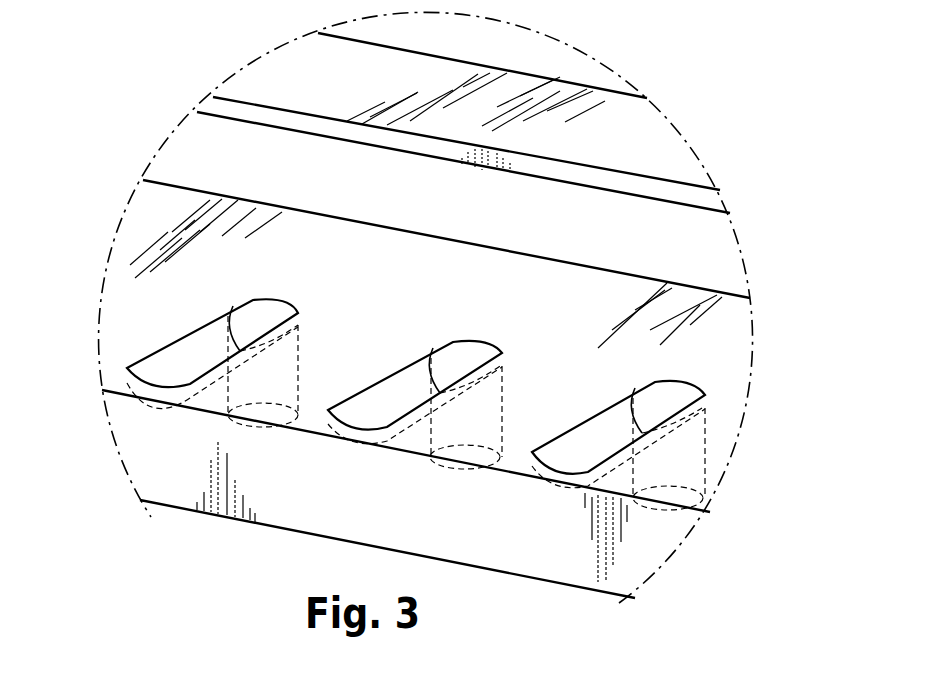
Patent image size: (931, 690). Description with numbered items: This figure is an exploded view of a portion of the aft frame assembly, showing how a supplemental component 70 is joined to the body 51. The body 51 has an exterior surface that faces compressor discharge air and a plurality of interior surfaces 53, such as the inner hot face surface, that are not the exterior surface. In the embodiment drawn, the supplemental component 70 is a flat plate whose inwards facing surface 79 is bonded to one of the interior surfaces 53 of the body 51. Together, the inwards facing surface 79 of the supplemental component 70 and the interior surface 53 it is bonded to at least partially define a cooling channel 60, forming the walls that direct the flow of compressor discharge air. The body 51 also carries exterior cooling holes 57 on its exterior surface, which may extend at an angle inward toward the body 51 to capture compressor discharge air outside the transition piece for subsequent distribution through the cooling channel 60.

The supplemental component 70 is at (606, 101).
The inwards facing surface 79 is at (690, 207).
The interior surfaces 53 is at (431, 295).
The body 51 is at (135, 455).
The cooling channel 60 is at (583, 423).
The exterior cooling holes 57 is at (465, 462).